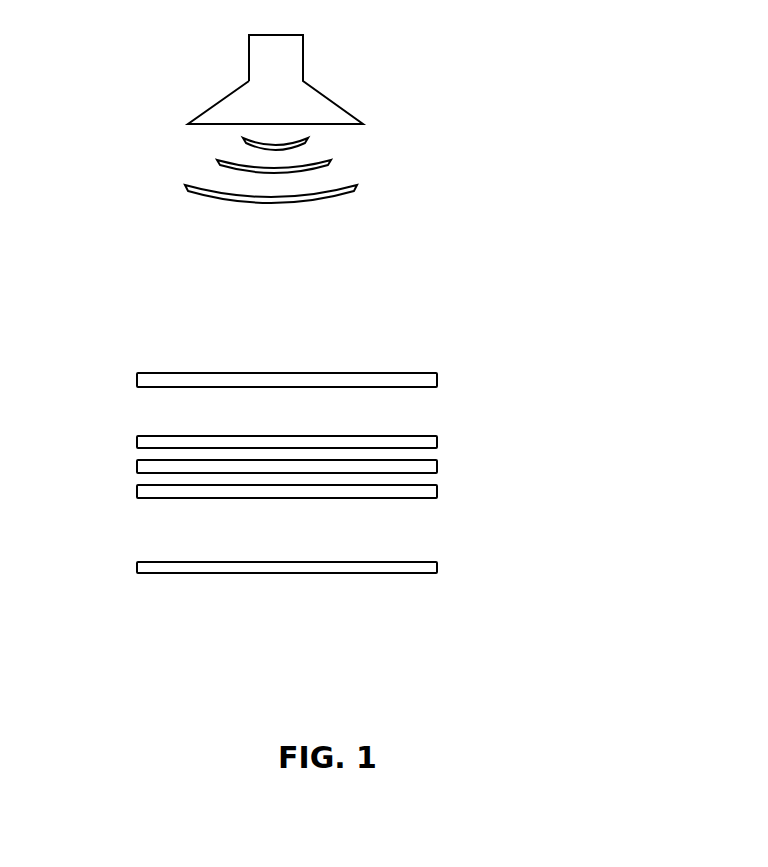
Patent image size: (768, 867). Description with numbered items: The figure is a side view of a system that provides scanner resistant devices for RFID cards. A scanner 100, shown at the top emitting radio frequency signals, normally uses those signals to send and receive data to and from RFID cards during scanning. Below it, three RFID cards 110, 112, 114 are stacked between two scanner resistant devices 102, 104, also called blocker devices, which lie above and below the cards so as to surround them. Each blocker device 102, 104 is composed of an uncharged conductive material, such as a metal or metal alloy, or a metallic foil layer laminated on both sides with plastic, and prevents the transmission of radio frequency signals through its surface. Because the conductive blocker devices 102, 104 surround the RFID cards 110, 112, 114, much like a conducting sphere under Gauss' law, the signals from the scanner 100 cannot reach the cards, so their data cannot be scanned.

The scanner 100 is at (386, 123).
The scanner resistant device 102 is at (451, 386).
The RFID card 110 is at (451, 448).
The RFID card 112 is at (451, 473).
The RFID card 114 is at (451, 498).
The scanner resistant device 104 is at (451, 573).